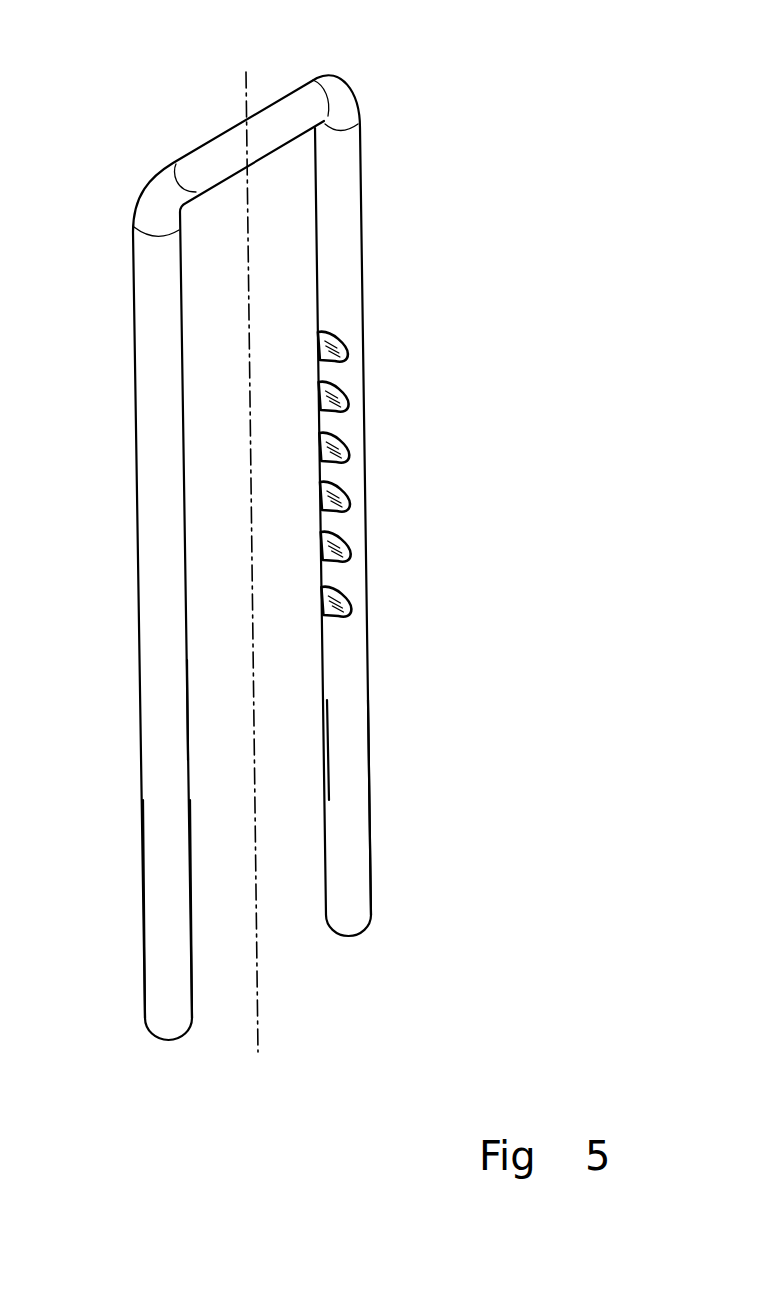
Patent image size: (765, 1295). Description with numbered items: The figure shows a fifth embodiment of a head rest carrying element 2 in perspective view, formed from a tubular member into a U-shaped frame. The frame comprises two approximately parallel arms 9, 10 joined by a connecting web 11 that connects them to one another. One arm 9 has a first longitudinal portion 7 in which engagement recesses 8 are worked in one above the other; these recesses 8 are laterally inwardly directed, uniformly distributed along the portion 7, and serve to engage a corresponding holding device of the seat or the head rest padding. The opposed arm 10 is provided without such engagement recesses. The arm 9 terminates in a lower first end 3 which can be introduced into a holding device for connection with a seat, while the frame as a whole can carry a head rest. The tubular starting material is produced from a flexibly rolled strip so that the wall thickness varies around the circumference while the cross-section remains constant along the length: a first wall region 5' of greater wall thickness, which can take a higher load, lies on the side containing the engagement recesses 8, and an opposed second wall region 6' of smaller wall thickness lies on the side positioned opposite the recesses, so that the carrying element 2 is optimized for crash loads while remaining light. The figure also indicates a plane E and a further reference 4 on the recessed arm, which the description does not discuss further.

The head rest carrying element 2 is at (538, 101).
The connecting web 11 is at (277, 115).
The arm 10 is at (130, 366).
The arm 9 is at (365, 158).
The spray tube 4 is at (340, 248).
The lower first end 3 is at (357, 932).
The first longitudinal portion 7 is at (363, 330).
The engagement recesses 8 is at (325, 508).
The first wall region 5' is at (264, 730).
The second wall region 6' is at (248, 853).
The plane of symmetry E is at (260, 962).